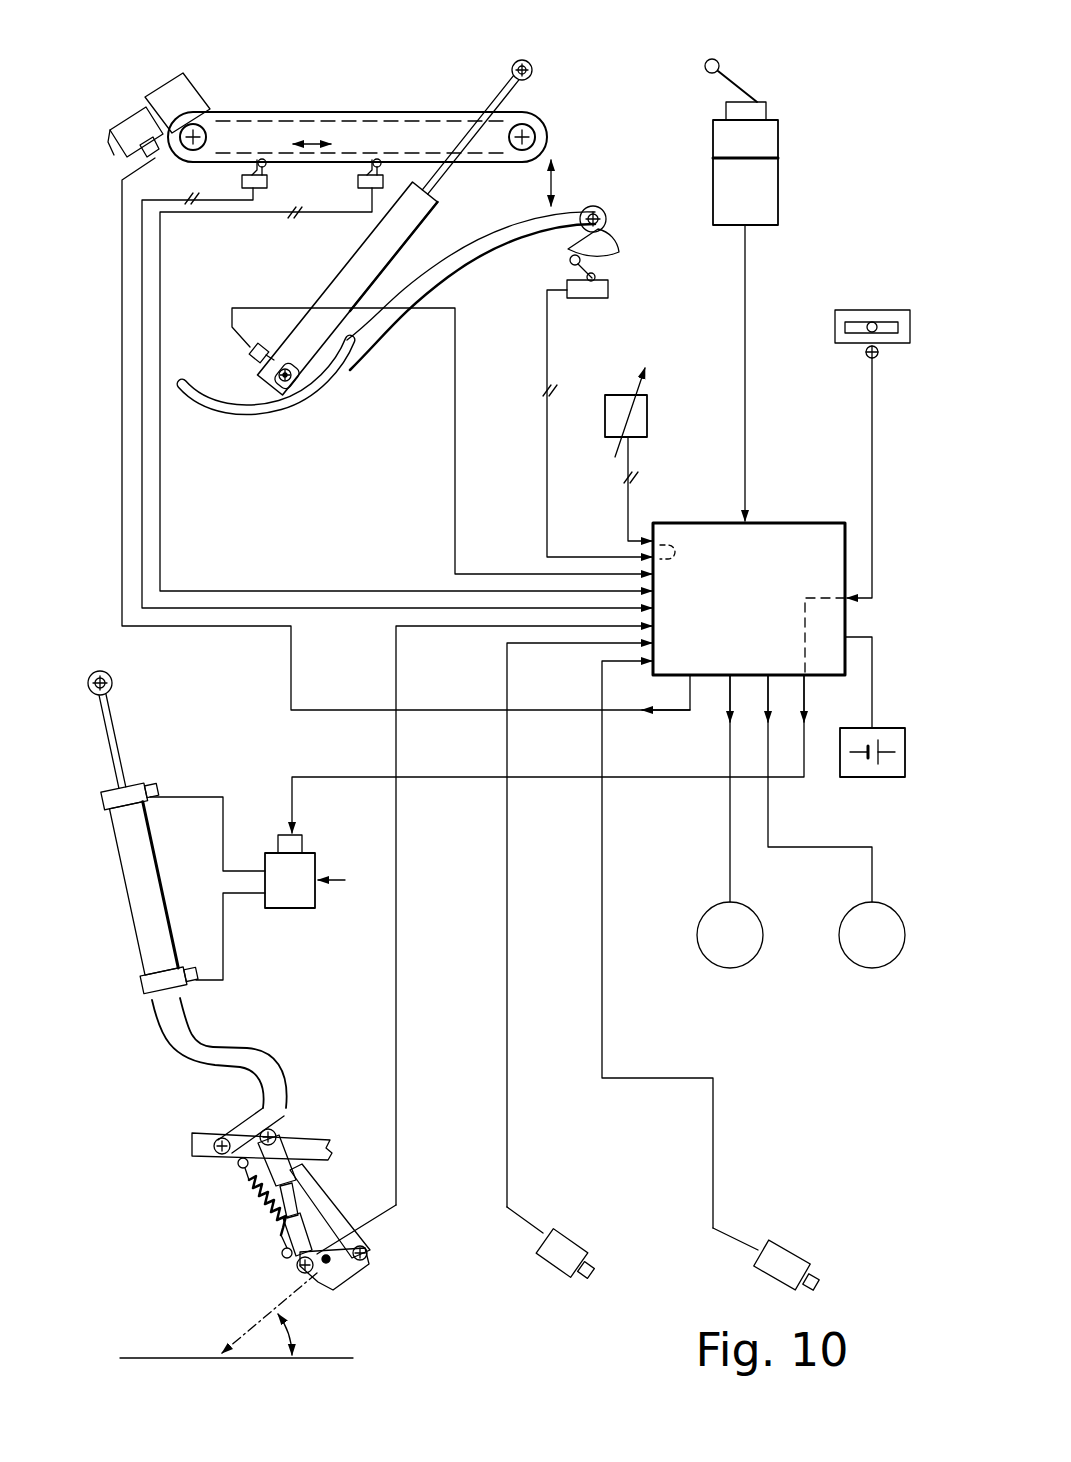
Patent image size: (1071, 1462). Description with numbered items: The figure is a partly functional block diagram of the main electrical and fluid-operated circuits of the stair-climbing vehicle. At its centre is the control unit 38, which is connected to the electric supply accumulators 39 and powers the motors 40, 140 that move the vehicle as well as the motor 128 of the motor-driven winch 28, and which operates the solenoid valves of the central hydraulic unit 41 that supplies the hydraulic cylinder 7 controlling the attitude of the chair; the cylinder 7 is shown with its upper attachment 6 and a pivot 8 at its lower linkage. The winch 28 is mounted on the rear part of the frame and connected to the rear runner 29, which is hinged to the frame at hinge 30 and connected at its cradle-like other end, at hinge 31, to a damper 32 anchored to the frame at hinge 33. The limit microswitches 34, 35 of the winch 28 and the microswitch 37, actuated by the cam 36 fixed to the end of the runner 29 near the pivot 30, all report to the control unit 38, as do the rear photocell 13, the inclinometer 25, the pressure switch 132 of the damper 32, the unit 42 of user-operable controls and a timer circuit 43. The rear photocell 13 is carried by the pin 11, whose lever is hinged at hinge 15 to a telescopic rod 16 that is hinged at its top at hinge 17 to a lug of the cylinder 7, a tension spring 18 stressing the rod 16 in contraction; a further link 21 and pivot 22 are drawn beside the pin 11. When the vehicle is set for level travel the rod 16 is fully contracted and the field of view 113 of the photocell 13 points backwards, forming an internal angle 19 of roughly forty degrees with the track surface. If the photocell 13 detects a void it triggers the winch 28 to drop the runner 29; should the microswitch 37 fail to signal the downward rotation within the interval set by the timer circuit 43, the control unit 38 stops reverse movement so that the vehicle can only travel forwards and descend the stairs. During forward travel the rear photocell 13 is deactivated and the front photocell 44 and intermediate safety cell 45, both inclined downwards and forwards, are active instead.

The motor 128 is at (172, 78).
The motor-driven winch 28 is at (311, 112).
The hinge 33 is at (529, 62).
The limit microswitch 35 is at (242, 181).
The limit microswitch 34 is at (358, 183).
The damper 32 is at (345, 283).
The pressure switch 132 is at (250, 352).
The rear runner 29 is at (369, 350).
The hinge 31 is at (280, 390).
The hinge 30 is at (596, 207).
The cam 36 is at (608, 247).
The microswitch 37 is at (605, 292).
The unit of controls 42 is at (790, 172).
The inclinometer 25 is at (873, 307).
The timer circuit 43 is at (648, 416).
The control unit 38 is at (749, 599).
The electric supply accumulators 39 is at (887, 778).
The motor 40 is at (730, 935).
The motor 140 is at (872, 935).
The central hydraulic unit 41 is at (305, 871).
The pivot 6 is at (113, 683).
The hydraulic cylinder 7 is at (133, 920).
The pivot 8 is at (213, 1140).
The hinge 17 is at (276, 1130).
The tension spring 18 is at (240, 1197).
The telescopic rod 16 is at (270, 1217).
The link 21 is at (326, 1206).
The pivot 22 is at (367, 1252).
The hinge 15 is at (297, 1266).
The pin 11 is at (333, 1270).
The rear photocell 13 is at (355, 1266).
The field of view 113 is at (240, 1336).
The internal angle 19 is at (294, 1332).
The intermediate safety cell 45 is at (560, 1254).
The front photocell 44 is at (780, 1262).